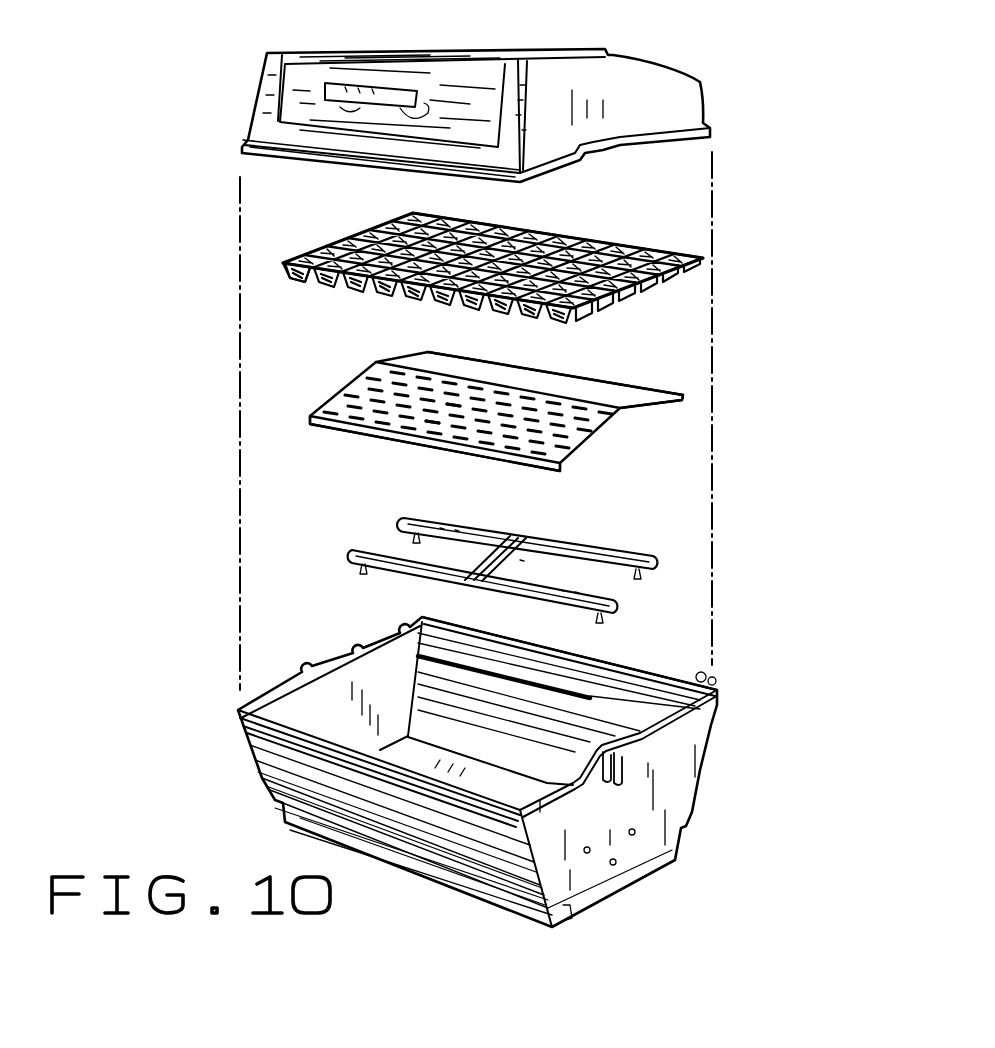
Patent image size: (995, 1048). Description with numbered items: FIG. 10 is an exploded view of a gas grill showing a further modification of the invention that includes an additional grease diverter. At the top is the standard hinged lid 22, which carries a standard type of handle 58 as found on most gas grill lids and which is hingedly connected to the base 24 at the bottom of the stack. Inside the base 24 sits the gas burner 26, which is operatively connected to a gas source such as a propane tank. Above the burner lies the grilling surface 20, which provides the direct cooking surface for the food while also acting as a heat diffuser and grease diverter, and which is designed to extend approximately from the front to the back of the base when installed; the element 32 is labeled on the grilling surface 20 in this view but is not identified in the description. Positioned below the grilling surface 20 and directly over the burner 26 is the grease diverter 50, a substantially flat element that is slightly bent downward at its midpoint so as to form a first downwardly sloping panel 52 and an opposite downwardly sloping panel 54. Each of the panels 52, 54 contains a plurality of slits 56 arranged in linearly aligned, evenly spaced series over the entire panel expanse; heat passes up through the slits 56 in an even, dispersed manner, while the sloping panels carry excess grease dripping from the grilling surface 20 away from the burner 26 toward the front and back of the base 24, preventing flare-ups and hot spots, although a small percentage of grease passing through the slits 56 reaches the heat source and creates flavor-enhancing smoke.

The grilling surface 20 is at (652, 235).
The hinged lid 22 is at (323, 102).
The base 24 is at (683, 745).
The gas burner 26 is at (655, 566).
The cell 32 is at (297, 283).
The grease diverter 50 is at (597, 420).
The first downwardly sloping panel 52 is at (370, 438).
The opposite downwardly sloping panel 54 is at (672, 393).
The slits 56 is at (445, 430).
The handle 58 is at (377, 100).